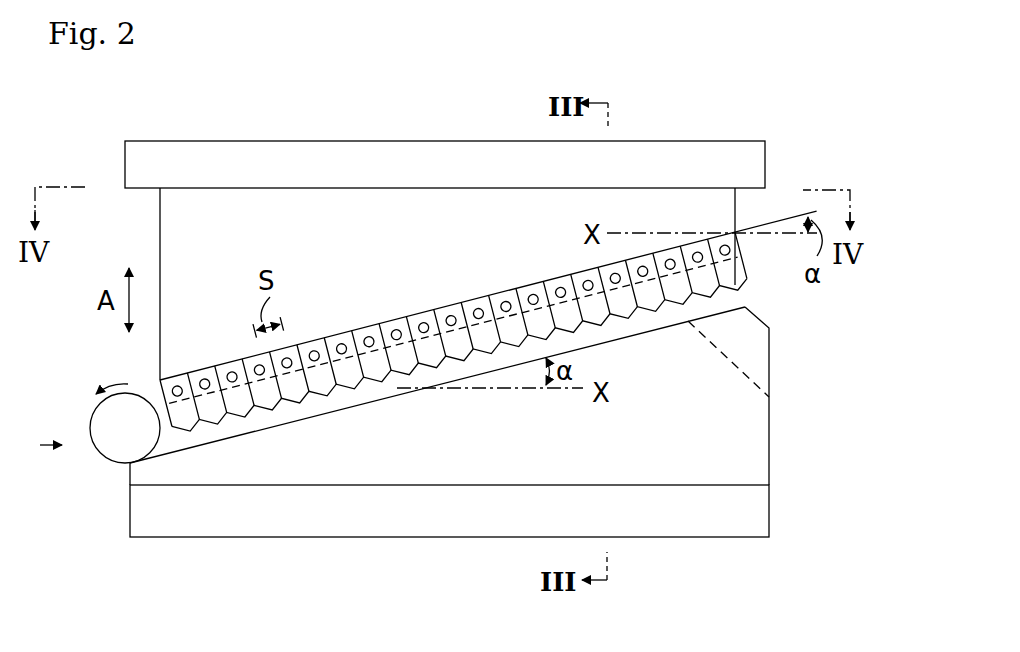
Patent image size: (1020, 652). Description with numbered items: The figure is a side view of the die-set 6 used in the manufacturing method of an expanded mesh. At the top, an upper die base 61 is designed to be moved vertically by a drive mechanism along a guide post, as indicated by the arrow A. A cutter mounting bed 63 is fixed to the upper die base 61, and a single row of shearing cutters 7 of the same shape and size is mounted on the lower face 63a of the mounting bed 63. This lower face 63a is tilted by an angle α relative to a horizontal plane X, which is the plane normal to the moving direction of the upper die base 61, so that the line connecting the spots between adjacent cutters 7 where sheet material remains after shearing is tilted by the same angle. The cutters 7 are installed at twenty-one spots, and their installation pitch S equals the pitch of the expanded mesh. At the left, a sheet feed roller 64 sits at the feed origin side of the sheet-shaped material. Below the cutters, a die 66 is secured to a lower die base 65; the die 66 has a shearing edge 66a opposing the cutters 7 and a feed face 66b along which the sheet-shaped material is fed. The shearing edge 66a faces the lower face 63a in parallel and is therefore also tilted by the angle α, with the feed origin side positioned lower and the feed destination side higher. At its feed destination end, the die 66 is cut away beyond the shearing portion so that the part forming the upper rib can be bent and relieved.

The die-set 6 is at (90, 158).
The upper die base 61 is at (353, 157).
The cutter mounting bed 63 is at (452, 205).
The lower face 63a is at (494, 298).
The shearing cutter 7 is at (742, 282).
The sheet feed roller 64 is at (105, 442).
The lower die base 65 is at (348, 523).
The die 66 is at (423, 463).
The shearing edge 66a is at (628, 338).
The feed face 66b is at (285, 425).